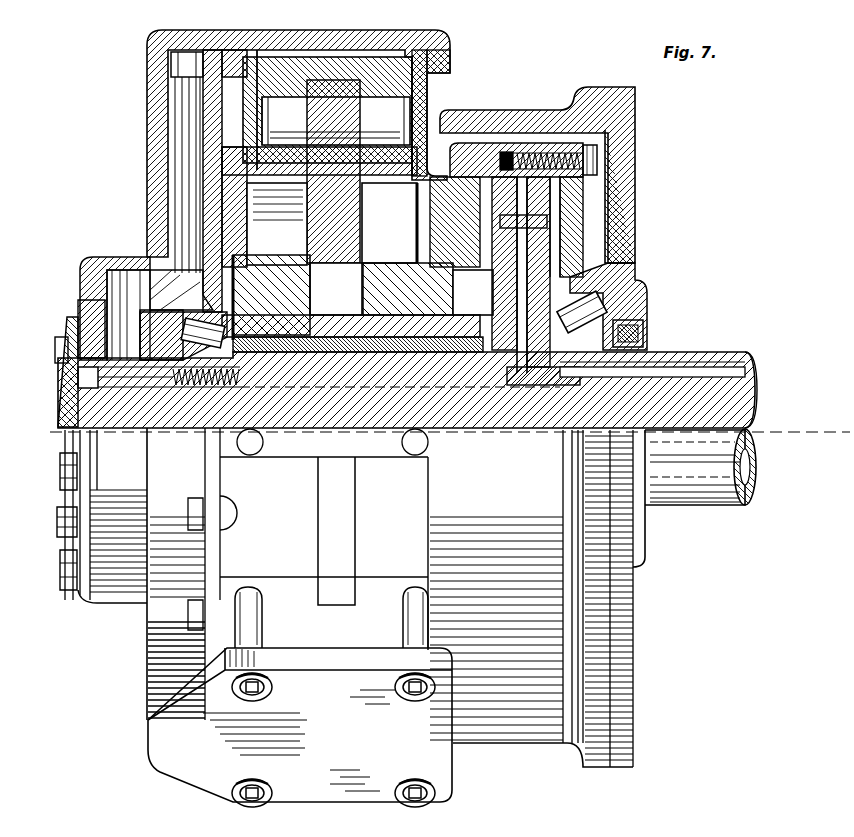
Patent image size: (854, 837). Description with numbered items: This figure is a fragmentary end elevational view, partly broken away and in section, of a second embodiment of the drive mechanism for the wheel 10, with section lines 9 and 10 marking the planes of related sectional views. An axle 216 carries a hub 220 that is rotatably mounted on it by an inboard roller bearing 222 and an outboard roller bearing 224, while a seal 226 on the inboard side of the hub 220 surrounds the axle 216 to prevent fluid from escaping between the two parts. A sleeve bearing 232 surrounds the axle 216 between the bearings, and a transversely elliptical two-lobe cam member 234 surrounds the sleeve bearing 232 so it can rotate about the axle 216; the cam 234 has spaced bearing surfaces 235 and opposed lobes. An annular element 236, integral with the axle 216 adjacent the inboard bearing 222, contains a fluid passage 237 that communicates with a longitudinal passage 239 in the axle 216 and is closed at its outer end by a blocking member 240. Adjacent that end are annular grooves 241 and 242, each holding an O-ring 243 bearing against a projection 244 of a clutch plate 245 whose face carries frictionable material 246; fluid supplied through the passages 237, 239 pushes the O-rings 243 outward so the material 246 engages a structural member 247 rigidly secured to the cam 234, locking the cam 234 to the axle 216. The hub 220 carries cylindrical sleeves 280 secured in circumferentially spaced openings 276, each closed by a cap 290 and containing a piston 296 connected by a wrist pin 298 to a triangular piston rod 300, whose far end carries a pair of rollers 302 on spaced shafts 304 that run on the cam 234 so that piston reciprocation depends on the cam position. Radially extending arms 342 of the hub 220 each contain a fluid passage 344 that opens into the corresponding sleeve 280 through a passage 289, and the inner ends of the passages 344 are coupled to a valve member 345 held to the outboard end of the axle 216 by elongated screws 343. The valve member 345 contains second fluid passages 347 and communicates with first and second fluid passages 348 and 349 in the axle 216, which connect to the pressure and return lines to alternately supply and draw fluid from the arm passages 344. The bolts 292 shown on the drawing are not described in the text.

The section line 9 is at (337, 13).
The wheel 10 is at (187, 13).
The axle 216 is at (706, 505).
The hub 220 is at (533, 110).
The inboard roller bearing 222 is at (612, 318).
The outboard roller bearing 224 is at (246, 349).
The seal 226 is at (645, 337).
The sleeve bearing 232 is at (351, 326).
The cam member 234 is at (334, 197).
The bearing surfaces 235 is at (384, 434).
The annular element 236 is at (520, 340).
The fluid passage 237 is at (527, 305).
The passage 239 is at (450, 392).
The blocking member 240 is at (580, 187).
The annular groove 241 is at (580, 236).
The annular groove 242 is at (492, 245).
The O-ring 243 is at (492, 209).
The projection 244 is at (643, 218).
The clutch plate 245 is at (643, 201).
The frictionable material 246 is at (643, 250).
The structural member 247 is at (483, 143).
The openings 276 is at (312, 173).
The cylindrical sleeve 280 is at (427, 95).
The passage 289 is at (257, 50).
The cap 290 is at (445, 56).
The bolts 292 is at (266, 642).
The piston 296 is at (398, 45).
The wrist pin 298 is at (290, 97).
The piston rod 300 is at (353, 217).
The rollers 302 is at (343, 297).
The shafts 304 is at (252, 244).
The arms 342 is at (147, 220).
The screws 343 is at (183, 390).
The fluid passage 344 is at (173, 185).
The valve member 345 is at (85, 405).
The second fluid passages 347 is at (112, 433).
The first fluid passages 348 is at (757, 460).
The second fluid passages 349 is at (753, 400).